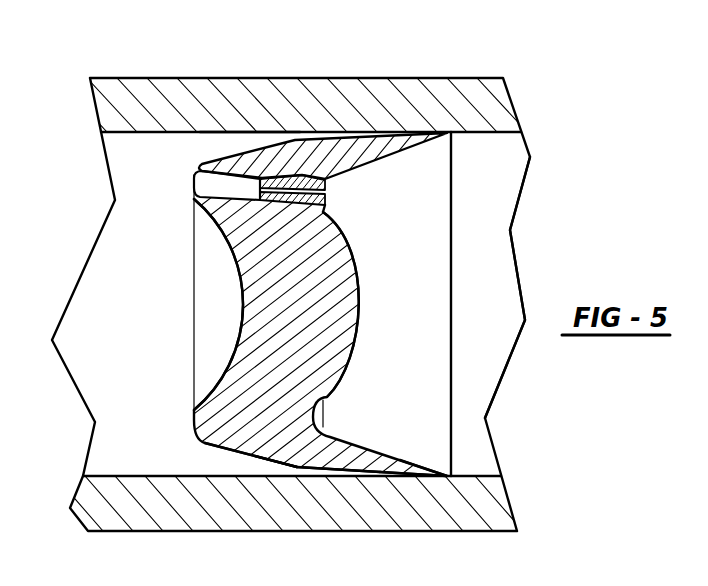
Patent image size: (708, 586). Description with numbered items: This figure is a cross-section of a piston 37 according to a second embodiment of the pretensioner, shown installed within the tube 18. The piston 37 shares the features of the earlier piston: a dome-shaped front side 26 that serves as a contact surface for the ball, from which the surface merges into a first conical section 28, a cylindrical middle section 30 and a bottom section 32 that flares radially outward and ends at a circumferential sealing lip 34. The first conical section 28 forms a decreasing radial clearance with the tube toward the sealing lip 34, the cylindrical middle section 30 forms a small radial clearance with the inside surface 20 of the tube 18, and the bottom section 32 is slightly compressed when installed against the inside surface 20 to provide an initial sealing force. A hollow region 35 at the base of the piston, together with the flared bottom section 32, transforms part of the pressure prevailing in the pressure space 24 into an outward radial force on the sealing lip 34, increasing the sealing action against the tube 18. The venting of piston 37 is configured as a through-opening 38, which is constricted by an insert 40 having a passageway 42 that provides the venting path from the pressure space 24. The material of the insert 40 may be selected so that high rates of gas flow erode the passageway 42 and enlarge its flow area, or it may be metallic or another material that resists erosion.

The tube 18 is at (132, 78).
The inside surface 20 is at (208, 132).
The pressure space 24 is at (486, 277).
The front side 26 is at (232, 257).
The first conical section 28 is at (268, 463).
The cylindrical middle section 30 is at (335, 470).
The bottom section 32 is at (408, 473).
The sealing lip 34 is at (452, 357).
The hollow region 35 is at (404, 222).
The piston 37 is at (235, 451).
The through-opening 38 is at (200, 174).
The insert 40 is at (347, 180).
The passageway 42 is at (395, 198).